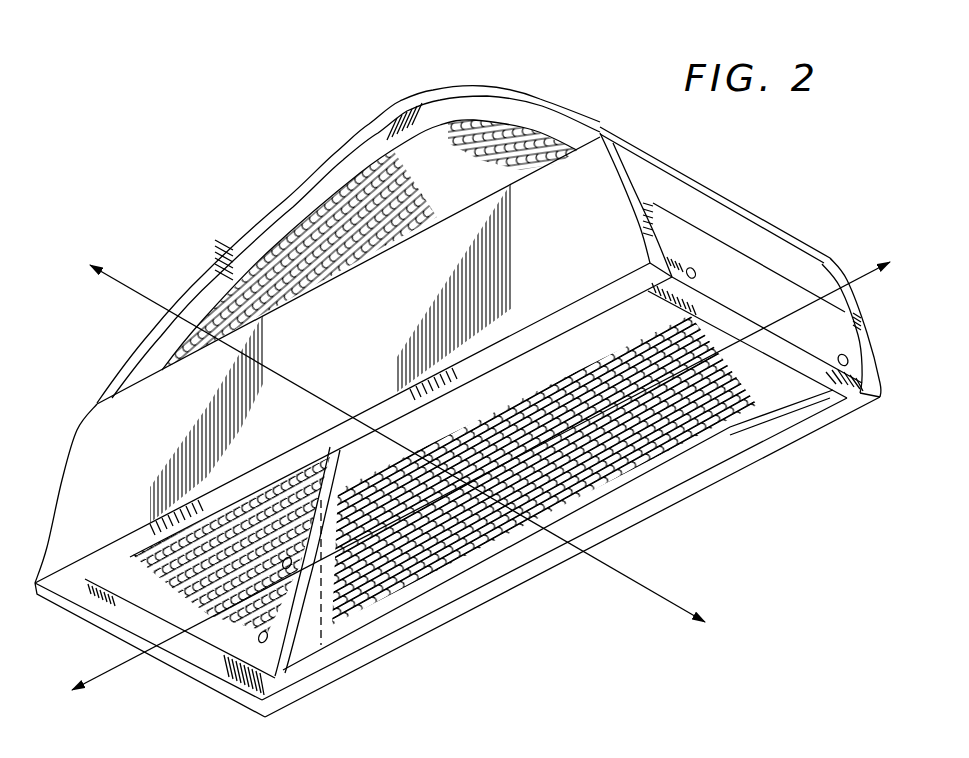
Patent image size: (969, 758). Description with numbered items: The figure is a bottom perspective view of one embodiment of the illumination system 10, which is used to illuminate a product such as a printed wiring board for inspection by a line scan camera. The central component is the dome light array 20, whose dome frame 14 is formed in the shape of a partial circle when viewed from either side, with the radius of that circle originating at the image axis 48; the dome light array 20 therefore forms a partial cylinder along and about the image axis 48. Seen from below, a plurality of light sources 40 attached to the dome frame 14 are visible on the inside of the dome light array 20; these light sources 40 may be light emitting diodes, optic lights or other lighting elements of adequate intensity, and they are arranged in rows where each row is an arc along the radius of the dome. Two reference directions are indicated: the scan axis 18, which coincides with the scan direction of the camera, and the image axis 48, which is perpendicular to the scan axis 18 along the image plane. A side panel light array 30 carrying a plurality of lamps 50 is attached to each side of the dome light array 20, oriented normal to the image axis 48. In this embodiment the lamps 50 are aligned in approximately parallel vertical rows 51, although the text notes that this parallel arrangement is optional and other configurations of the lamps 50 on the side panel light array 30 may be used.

The illumination system 10 is at (148, 162).
The dome frame 14 is at (757, 228).
The scan axis 18 is at (856, 278).
The dome light array 20 is at (529, 70).
The side panel light array 30 is at (109, 508).
The light sources 40 is at (343, 175).
The image axis 48 is at (672, 600).
The lamps 50 is at (760, 450).
The parallel vertical rows 51 is at (320, 650).